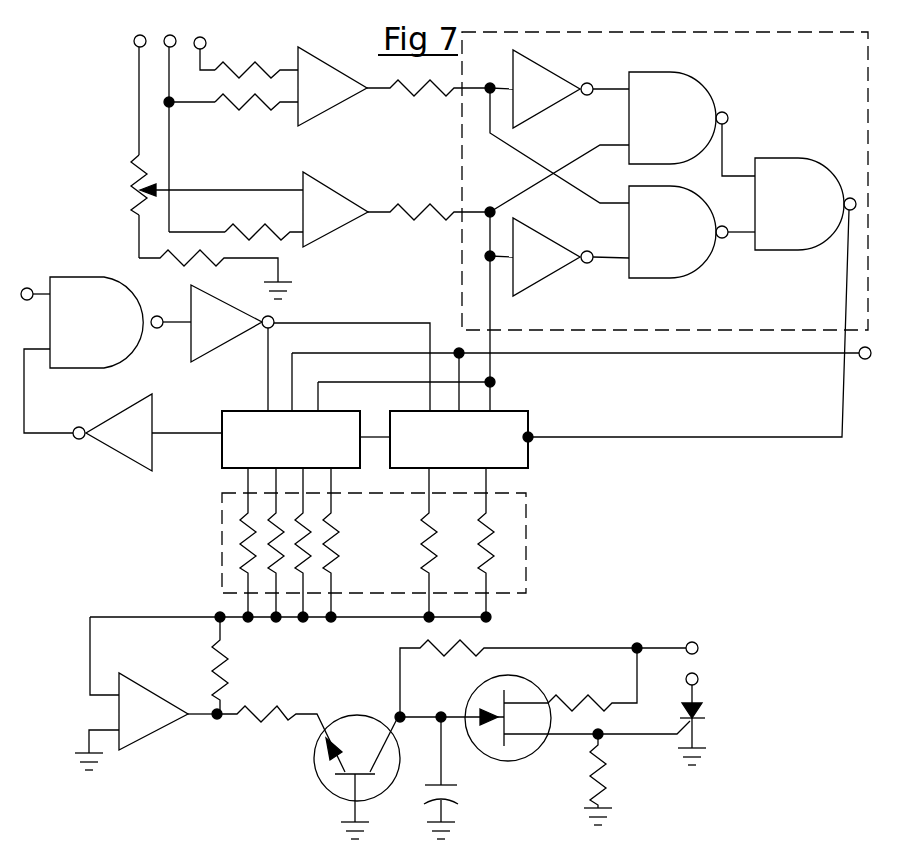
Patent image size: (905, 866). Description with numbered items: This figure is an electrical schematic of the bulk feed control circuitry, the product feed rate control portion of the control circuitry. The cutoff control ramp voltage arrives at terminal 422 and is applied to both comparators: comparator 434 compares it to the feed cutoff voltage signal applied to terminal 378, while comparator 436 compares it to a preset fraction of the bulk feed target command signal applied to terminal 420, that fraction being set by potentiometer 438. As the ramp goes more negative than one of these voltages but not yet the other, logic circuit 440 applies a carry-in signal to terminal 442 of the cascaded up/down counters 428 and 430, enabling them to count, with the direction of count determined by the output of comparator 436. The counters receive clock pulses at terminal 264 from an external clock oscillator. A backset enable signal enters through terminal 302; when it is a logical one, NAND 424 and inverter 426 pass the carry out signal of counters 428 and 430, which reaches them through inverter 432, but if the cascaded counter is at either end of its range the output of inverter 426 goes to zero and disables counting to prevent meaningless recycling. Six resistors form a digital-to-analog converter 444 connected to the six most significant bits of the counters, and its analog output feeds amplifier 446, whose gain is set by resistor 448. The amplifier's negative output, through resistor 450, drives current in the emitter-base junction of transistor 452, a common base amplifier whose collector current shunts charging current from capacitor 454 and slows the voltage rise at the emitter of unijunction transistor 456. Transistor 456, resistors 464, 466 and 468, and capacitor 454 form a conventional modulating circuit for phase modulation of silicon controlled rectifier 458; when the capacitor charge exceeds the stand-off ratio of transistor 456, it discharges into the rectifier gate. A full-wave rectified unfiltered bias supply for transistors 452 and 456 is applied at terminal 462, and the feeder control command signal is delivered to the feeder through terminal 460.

The terminal 264 is at (865, 360).
The terminal 302 is at (30, 288).
The terminal 378 is at (222, 30).
The terminal 420 is at (137, 36).
The terminal 422 is at (170, 36).
The NAND 424 is at (144, 336).
The inverter 426 is at (238, 306).
The up/down counter 428 is at (244, 410).
The up/down counter 430 is at (506, 412).
The inverter 432 is at (104, 446).
The comparator 434 is at (320, 53).
The comparator 436 is at (335, 183).
The potentiometer 438 is at (126, 181).
The logic circuit 440 is at (808, 107).
The terminal 442 is at (534, 444).
The digital-to-analog converter 444 is at (526, 530).
The amplifier 446 is at (148, 684).
The resistor 448 is at (222, 652).
The resistor 450 is at (268, 724).
The transistor 452 is at (372, 718).
The capacitor 454 is at (456, 804).
The transistor 456 is at (514, 756).
The silicon controlled rectifier 458 is at (720, 706).
The terminal 460 is at (698, 664).
The terminal 462 is at (707, 638).
The resistor 464 is at (436, 652).
The resistor 466 is at (604, 702).
The resistor 468 is at (592, 764).